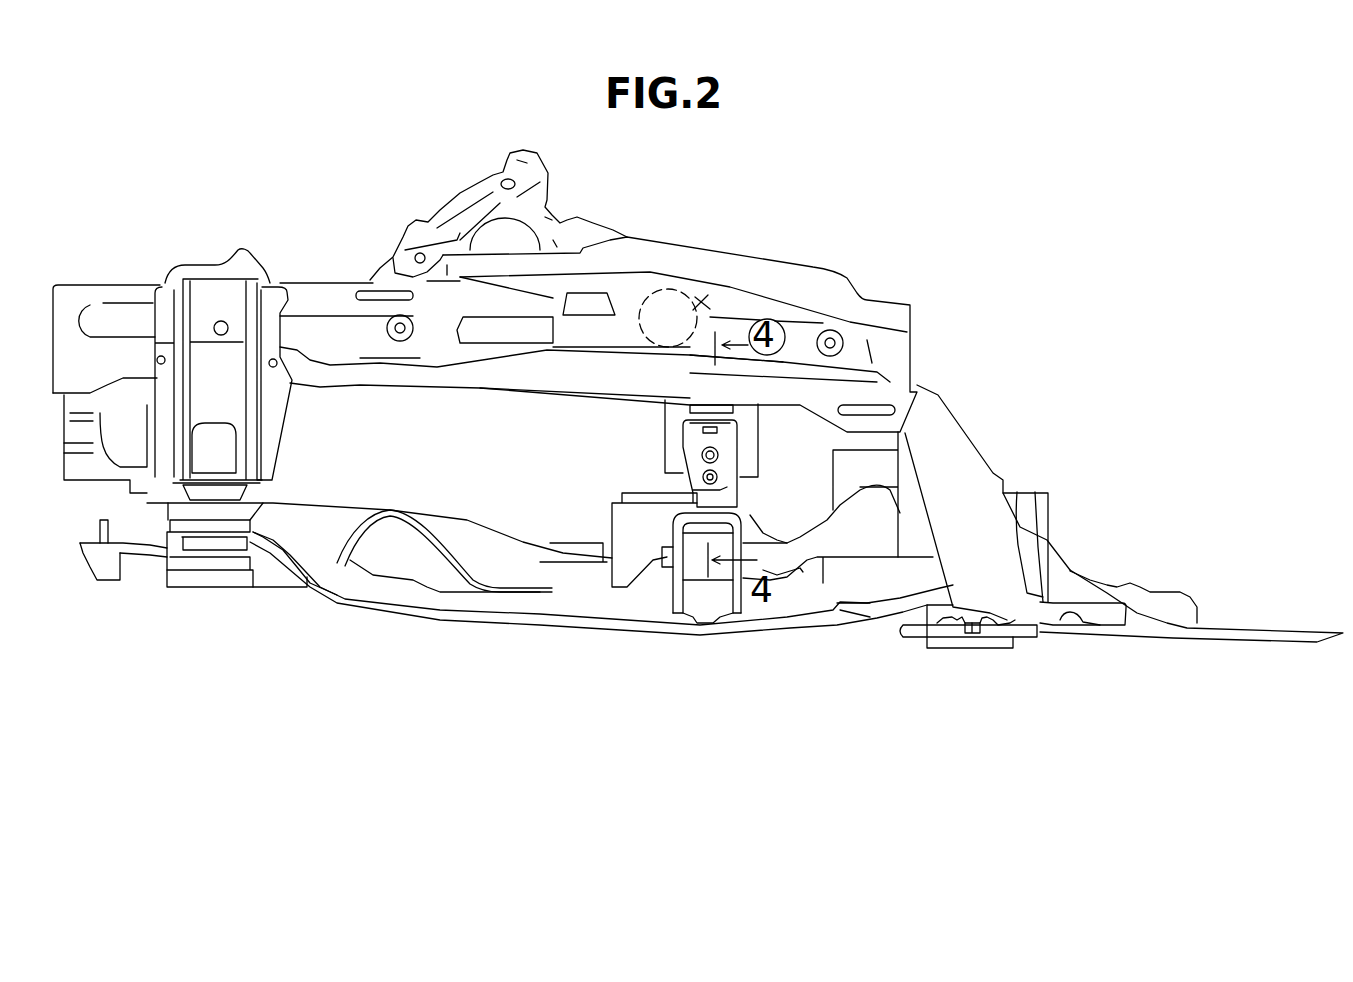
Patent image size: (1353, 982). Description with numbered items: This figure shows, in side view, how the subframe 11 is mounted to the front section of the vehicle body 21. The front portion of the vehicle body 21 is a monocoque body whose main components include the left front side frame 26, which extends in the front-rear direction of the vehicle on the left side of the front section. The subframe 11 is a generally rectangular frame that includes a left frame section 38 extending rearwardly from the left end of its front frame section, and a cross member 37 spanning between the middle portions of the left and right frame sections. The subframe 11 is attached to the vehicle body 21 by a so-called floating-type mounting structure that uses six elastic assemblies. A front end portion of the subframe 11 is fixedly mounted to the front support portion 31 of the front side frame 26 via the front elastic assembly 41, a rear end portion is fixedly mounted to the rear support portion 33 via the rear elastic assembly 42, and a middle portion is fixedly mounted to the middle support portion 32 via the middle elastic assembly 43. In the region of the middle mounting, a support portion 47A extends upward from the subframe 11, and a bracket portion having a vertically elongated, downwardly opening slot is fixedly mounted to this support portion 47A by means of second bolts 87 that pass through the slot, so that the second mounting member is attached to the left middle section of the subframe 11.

The subframe 11 is at (381, 446).
The vehicle body 21 is at (953, 290).
The left front side frame 26 is at (303, 277).
The front support portion 31 is at (228, 410).
The middle support portion 32 is at (703, 387).
The rear support portion 33 is at (977, 570).
The cross member 37 is at (867, 513).
The left frame section 38 is at (503, 622).
The front elastic assembly 41 is at (217, 550).
The rear elastic assembly 42 is at (967, 633).
The middle elastic assembly 43 is at (677, 457).
The support portion 47A is at (728, 502).
The second bolt 87 is at (740, 450).